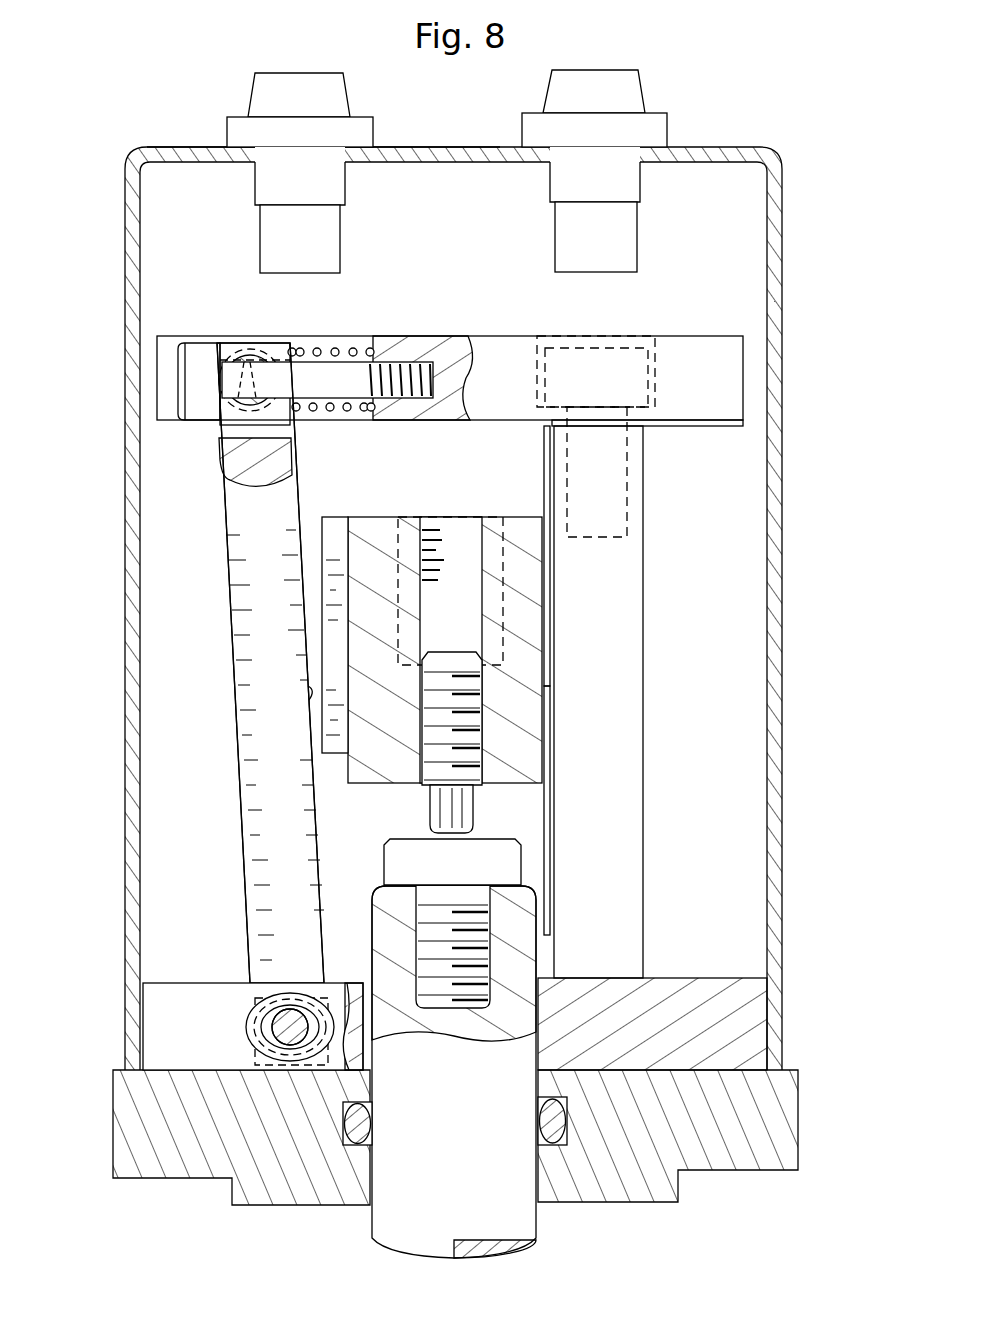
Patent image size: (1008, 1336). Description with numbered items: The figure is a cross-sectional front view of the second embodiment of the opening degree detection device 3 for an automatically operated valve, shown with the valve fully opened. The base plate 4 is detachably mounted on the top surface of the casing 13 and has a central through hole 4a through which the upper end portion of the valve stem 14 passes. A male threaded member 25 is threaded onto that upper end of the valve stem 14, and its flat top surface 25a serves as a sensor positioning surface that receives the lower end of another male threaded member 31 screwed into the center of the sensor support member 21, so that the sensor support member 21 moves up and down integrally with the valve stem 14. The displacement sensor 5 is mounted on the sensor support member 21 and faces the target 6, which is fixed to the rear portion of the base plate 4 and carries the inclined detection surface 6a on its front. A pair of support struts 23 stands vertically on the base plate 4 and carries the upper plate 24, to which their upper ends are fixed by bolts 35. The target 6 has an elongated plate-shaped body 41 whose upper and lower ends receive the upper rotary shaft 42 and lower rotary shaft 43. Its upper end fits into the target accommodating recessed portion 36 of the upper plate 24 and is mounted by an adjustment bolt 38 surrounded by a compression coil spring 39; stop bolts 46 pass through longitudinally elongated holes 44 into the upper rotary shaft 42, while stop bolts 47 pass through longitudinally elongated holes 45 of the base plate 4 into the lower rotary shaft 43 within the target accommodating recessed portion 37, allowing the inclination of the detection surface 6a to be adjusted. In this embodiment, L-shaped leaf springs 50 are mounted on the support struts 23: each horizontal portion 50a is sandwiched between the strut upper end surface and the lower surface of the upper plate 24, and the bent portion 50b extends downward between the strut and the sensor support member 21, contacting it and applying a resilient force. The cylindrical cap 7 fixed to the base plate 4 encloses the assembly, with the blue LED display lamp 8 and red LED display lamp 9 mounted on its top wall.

The opening degree detection device 3 is at (784, 548).
The base plate 4 is at (752, 1023).
The through hole 4a is at (533, 1049).
The displacement sensor 5 is at (320, 653).
The target 6 is at (224, 606).
The inclined detection surface 6a is at (312, 700).
The cylindrical cap 7 is at (187, 152).
The blue LED display lamp 8 is at (645, 87).
The red LED display lamp 9 is at (350, 88).
The casing 13 is at (785, 1123).
The valve stem 14 is at (511, 1205).
The sensor support member 21 is at (530, 687).
The support struts 23 is at (632, 607).
The upper plate 24 is at (728, 362).
The male threaded member 25 is at (487, 917).
The flat top surface 25a is at (507, 833).
The male threaded member 31 is at (467, 807).
The bolts 35 is at (630, 353).
The target accommodating recessed portion 36 is at (367, 335).
The target accommodating recessed portion 37 is at (346, 983).
The adjustment bolt 38 is at (190, 380).
The compression coil spring 39 is at (317, 348).
The body 41 is at (260, 775).
The upper rotary shaft 42 is at (252, 375).
The lower rotary shaft 43 is at (297, 1067).
The longitudinally elongated holes 44 is at (320, 385).
The longitudinally elongated holes 45 is at (247, 1035).
The stop bolts 46 is at (235, 352).
The stop bolts 47 is at (282, 1040).
The leaf springs 50 is at (547, 868).
The horizontal portion 50a is at (695, 426).
The bent portion 50b is at (548, 483).